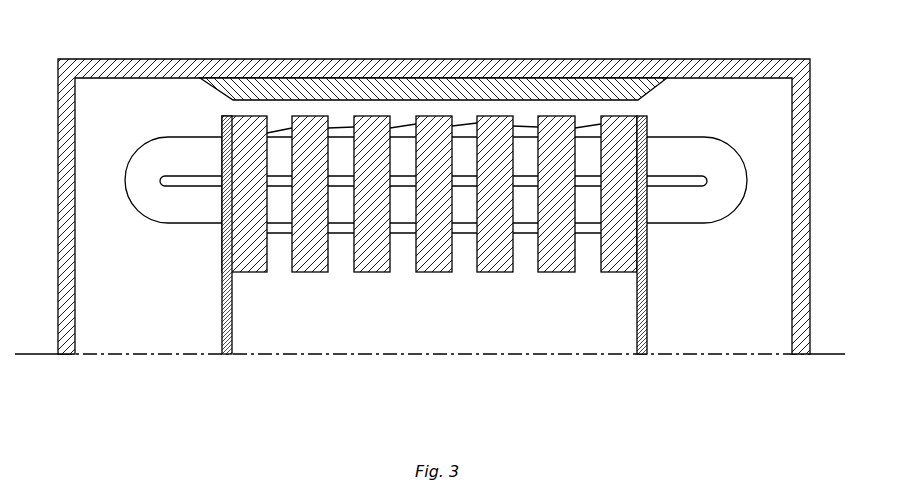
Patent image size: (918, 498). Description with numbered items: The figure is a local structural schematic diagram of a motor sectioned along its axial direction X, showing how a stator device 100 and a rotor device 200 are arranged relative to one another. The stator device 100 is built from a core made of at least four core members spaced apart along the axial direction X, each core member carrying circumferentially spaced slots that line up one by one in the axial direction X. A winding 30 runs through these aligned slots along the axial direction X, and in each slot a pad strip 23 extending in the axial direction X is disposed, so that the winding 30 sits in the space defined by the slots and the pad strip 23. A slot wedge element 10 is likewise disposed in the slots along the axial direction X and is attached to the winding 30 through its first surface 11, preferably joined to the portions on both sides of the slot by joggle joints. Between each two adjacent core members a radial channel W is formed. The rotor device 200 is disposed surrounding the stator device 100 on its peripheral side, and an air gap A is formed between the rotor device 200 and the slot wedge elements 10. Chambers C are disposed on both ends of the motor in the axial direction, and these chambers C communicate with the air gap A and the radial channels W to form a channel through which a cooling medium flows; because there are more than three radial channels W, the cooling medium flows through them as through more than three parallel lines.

The stator device 100 is at (652, 258).
The rotor device 200 is at (600, 93).
The winding 30 is at (187, 212).
The slot wedge element 10 is at (463, 125).
The first surface 11 is at (415, 135).
The pad strip 23 is at (530, 228).
The chamber C is at (158, 325).
The air gap A is at (340, 115).
The radial channel W is at (410, 250).
The axial direction X is at (438, 356).